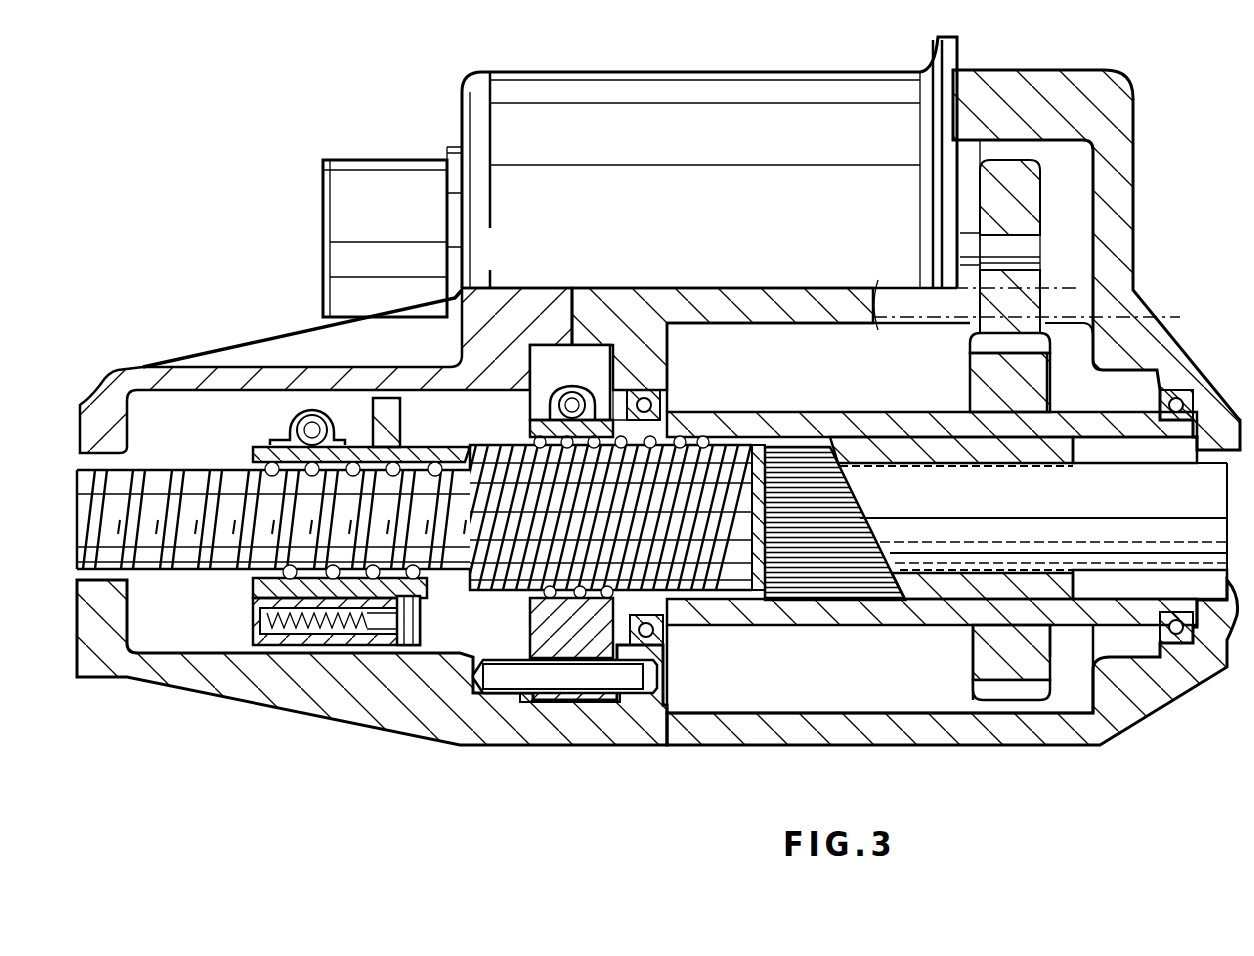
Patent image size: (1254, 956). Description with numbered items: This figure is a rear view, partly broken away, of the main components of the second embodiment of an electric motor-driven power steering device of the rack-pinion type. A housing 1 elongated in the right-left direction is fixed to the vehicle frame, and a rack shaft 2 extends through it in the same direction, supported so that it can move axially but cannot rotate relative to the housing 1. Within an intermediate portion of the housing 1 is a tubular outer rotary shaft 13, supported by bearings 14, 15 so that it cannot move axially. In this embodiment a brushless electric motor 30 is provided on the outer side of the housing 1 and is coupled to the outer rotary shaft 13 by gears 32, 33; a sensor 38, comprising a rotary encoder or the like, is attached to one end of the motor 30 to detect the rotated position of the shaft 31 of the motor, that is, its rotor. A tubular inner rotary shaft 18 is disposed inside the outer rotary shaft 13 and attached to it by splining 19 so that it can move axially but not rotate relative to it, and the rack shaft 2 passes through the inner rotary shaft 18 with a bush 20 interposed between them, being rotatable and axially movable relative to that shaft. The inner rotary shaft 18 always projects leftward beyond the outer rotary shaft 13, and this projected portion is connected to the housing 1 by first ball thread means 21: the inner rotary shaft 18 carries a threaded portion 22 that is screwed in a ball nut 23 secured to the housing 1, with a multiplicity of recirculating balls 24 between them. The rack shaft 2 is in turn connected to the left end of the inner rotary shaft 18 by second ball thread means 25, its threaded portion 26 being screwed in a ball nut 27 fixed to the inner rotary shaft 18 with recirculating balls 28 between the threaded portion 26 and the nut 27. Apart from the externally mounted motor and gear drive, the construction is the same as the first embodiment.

The housing 1 is at (736, 800).
The rack shaft 2 is at (1137, 512).
The outer rotary shaft 13 is at (862, 775).
The bearing 14 is at (648, 388).
The bearing 15 is at (1178, 400).
The inner rotary shaft 18 is at (922, 655).
The splining 19 is at (822, 645).
The bush 20 is at (984, 495).
The first ball thread means 21 is at (506, 398).
The threaded portion 22 is at (508, 442).
The ball nut 23 is at (582, 795).
The recirculating balls 24 is at (530, 618).
The second ball thread means 25 is at (258, 418).
The threaded portion 26 is at (237, 470).
The ball nut 27 is at (297, 742).
The recirculating balls 28 is at (253, 603).
The brushless electric motor 30 is at (472, 122).
The shaft of the motor 31 is at (968, 235).
The gear 32 is at (1145, 195).
The gear 33 is at (970, 375).
The sensor 38 is at (343, 220).